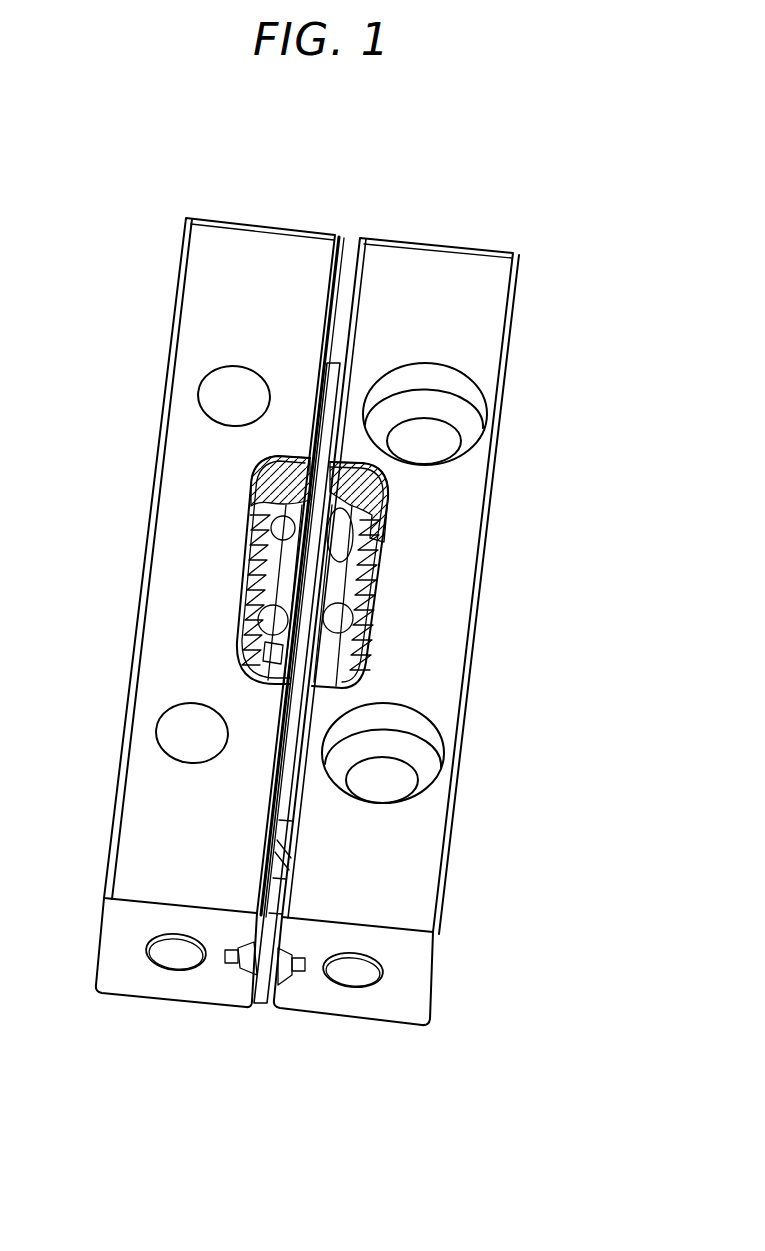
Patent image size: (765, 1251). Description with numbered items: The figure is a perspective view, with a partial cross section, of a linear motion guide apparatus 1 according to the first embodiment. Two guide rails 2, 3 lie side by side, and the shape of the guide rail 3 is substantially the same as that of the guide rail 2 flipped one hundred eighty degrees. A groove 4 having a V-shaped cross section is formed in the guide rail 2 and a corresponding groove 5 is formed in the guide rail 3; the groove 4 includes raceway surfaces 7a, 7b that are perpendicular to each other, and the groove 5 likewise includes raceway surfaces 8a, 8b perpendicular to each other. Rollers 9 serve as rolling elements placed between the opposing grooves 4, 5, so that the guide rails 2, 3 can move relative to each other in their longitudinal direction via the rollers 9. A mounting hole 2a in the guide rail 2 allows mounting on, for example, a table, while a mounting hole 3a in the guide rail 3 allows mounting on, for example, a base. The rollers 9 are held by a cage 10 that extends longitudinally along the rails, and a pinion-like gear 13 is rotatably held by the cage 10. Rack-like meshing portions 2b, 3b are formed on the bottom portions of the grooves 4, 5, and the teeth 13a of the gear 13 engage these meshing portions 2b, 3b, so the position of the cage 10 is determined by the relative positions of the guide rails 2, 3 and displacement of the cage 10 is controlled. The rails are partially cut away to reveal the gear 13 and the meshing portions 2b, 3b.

The linear motion guide apparatus 1 is at (382, 196).
The guide rail 2 is at (150, 626).
The mounting hole 2a is at (198, 396).
The rack-like meshing portion 2b is at (258, 588).
The guide rail 3 is at (450, 651).
The mounting hole 3a is at (455, 440).
The rack-like meshing portion 3b is at (352, 600).
The groove 4 is at (255, 1108).
The groove 5 is at (375, 1108).
The raceway surface 7a is at (200, 1005).
The raceway surface 7b is at (258, 1000).
The raceway surface 8a is at (282, 1002).
The raceway surface 8b is at (300, 1000).
The roller 9 is at (345, 541).
The cage 10 is at (270, 505).
The pinion-like gear 13 is at (240, 641).
The teeth 13a is at (240, 668).